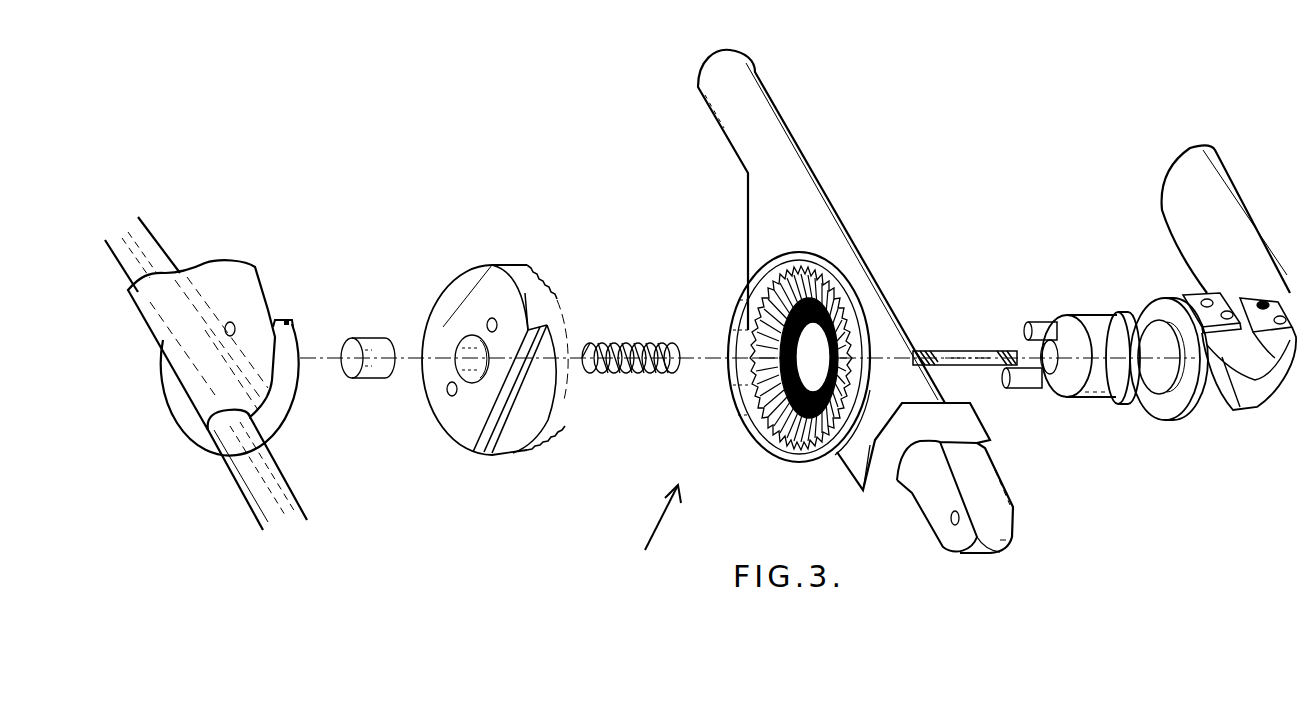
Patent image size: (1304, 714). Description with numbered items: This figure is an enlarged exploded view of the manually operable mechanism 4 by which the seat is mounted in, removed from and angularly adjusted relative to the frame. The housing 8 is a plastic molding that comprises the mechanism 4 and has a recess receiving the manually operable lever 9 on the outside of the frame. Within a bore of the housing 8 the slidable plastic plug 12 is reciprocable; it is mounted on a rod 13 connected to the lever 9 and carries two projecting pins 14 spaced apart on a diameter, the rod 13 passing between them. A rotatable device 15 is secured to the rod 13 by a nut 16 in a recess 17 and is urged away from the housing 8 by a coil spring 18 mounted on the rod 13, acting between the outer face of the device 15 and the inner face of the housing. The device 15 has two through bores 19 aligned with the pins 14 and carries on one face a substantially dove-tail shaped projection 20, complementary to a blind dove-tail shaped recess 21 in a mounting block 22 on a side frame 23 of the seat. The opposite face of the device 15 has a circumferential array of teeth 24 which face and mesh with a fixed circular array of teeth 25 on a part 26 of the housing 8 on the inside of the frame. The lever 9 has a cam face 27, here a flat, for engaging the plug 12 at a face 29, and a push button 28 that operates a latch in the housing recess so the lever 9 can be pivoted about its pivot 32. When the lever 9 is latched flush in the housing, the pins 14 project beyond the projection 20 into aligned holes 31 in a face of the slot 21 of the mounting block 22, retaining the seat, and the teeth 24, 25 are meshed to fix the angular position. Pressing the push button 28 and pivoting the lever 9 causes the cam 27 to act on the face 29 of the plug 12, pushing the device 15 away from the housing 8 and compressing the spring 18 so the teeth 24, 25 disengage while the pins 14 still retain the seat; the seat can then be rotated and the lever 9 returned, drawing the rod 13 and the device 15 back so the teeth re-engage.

The mechanism 4 is at (658, 535).
The housing 8 is at (897, 326).
The manually operable lever 9 is at (1178, 199).
The slidable plastic plug 12 is at (1082, 325).
The rod 13 is at (953, 355).
The projecting pins 14 is at (1003, 367).
The rotatable device 15 is at (555, 407).
The nut 16 is at (377, 377).
The recess 17 is at (474, 380).
The coil spring 18 is at (635, 373).
The through bores 19 is at (450, 384).
The dove-tail shaped projection 20 is at (525, 292).
The dove-tail shaped recess 21 is at (283, 313).
The mounting block 22 is at (297, 393).
The side frame 23 is at (257, 477).
The circumferential array of teeth 24 is at (552, 287).
The fixed circular array of teeth 25 is at (778, 452).
The part of the housing 26 is at (733, 318).
The cam face 27 is at (1227, 397).
The push button 28 is at (1287, 390).
The face of the plug 29 is at (1113, 313).
The aligned holes 31 is at (230, 322).
The pivot 32 is at (1263, 300).